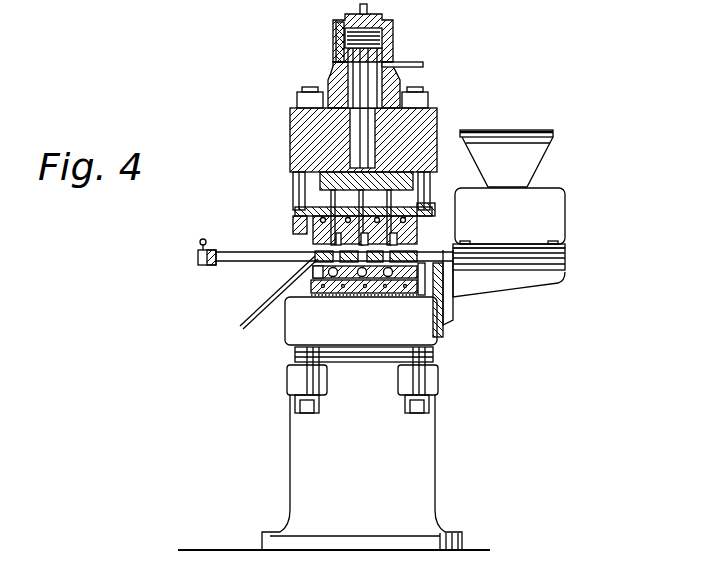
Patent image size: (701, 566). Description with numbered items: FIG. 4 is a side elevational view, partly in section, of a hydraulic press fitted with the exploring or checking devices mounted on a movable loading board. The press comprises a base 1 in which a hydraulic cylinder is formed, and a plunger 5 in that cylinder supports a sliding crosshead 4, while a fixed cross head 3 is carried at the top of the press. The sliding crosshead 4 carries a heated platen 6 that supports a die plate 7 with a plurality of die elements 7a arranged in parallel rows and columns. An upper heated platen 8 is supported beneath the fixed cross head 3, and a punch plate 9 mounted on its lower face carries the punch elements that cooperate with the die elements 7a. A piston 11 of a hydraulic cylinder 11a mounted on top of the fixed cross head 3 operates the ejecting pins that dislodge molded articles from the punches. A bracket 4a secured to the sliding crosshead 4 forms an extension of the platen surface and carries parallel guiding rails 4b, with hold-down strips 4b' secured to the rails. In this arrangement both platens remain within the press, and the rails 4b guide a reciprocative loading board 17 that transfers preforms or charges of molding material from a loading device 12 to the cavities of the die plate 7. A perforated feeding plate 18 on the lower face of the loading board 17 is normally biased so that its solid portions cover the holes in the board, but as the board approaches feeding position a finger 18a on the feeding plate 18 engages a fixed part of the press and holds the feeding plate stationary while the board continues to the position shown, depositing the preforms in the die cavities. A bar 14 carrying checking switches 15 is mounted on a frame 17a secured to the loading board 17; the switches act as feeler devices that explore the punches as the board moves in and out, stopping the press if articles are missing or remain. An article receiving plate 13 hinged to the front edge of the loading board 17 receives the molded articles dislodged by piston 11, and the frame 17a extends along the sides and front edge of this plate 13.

The base 1 is at (436, 432).
The fixed cross head 3 is at (291, 122).
The sliding crosshead 4 is at (287, 320).
The bracket 4a is at (513, 290).
The guiding rails 4b is at (528, 263).
The hold-down strips 4b' is at (533, 243).
The plunger 5 is at (410, 351).
The heated platen 6 is at (314, 296).
The die plate 7 is at (373, 294).
The die elements 7a is at (353, 296).
The upper heated platen 8 is at (320, 183).
The punch plate 9 is at (299, 228).
The piston 11 is at (380, 37).
The hydraulic cylinder 11a is at (336, 42).
The loading device 12 is at (559, 196).
The article receiving plate 13 is at (273, 292).
The bar 14 is at (209, 266).
The checking switches 15 is at (198, 254).
The loading board 17 is at (430, 237).
The frame 17a is at (270, 247).
The feeding plate 18 is at (432, 246).
The finger 18a is at (423, 295).